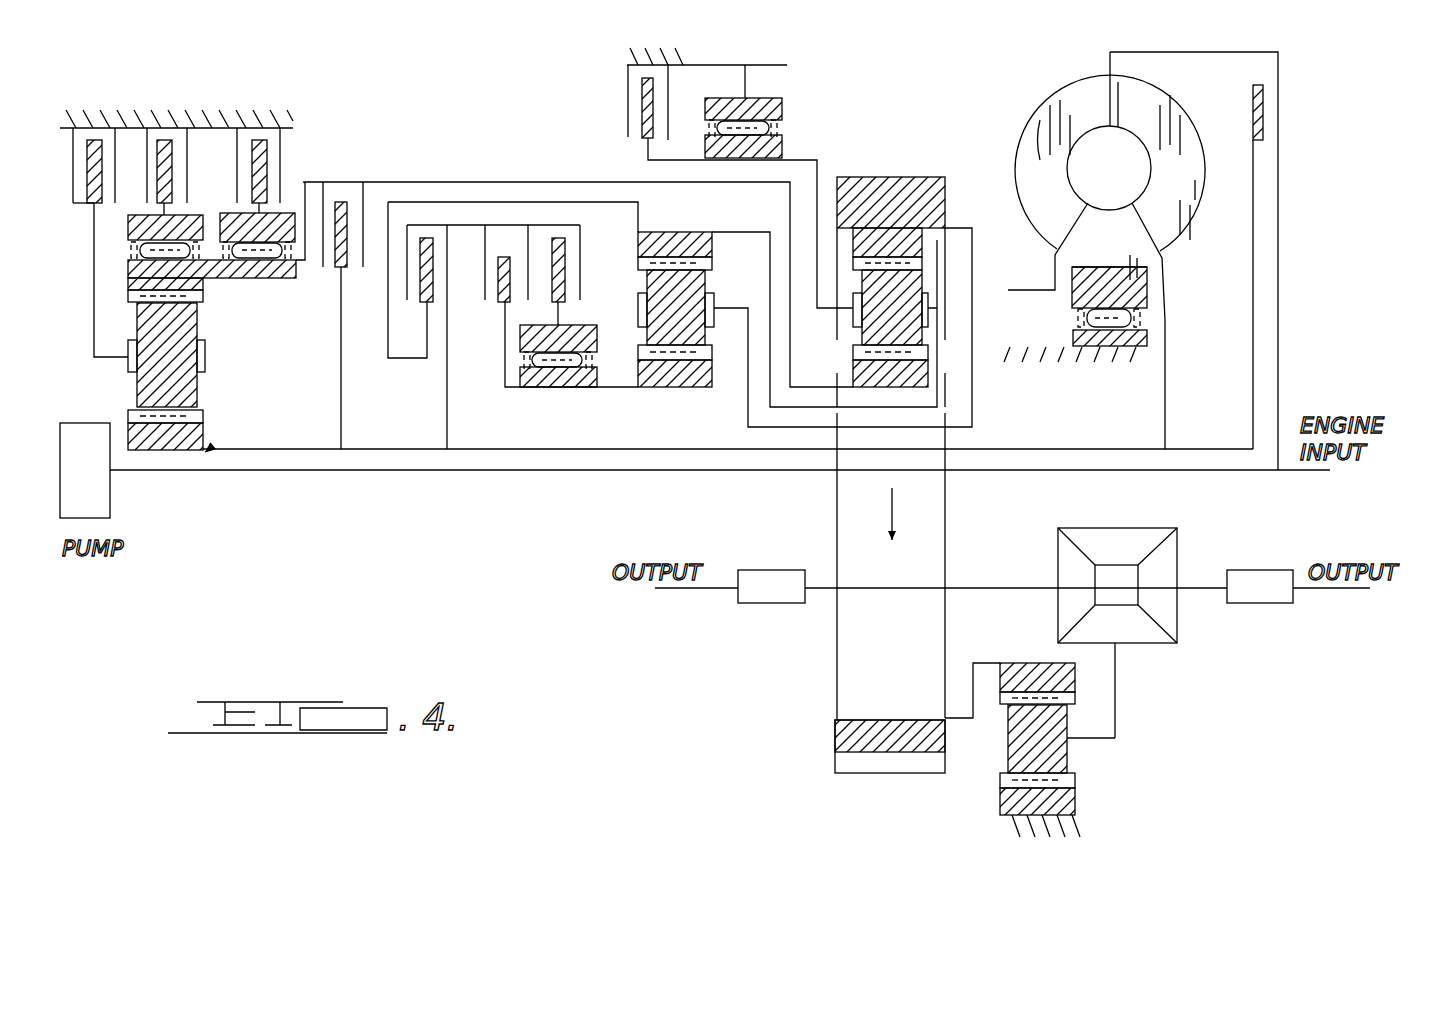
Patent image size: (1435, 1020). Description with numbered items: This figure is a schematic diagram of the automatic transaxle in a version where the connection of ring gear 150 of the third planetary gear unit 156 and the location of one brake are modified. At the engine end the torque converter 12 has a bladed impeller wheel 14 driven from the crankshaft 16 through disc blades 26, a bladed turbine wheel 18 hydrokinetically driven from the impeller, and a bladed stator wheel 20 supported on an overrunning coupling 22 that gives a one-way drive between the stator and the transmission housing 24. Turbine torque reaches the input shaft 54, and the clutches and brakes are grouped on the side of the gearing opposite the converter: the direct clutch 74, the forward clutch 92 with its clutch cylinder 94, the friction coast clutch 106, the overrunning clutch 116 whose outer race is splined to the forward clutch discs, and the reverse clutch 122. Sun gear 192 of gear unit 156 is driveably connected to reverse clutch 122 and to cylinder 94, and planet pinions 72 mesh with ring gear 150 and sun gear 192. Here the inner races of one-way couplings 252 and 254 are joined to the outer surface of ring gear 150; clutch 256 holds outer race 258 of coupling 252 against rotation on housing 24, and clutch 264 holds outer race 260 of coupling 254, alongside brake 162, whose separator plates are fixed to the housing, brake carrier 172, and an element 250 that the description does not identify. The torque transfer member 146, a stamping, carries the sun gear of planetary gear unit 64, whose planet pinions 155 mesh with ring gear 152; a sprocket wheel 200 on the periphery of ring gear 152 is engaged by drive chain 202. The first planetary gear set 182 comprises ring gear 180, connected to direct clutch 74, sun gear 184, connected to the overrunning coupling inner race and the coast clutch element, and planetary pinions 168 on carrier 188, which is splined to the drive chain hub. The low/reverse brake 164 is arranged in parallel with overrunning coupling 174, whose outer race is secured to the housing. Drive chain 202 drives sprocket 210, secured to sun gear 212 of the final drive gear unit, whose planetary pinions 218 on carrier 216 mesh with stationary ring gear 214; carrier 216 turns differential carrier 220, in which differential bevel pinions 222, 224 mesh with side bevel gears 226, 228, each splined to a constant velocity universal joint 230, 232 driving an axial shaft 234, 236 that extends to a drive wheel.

The torque converter 12 is at (1035, 103).
The bladed impeller wheel 14 is at (1056, 197).
The crankshaft 16 is at (1318, 478).
The bladed turbine wheel 18 is at (1187, 180).
The bladed stator wheel 20 is at (1120, 252).
The overrunning coupling 22 is at (1135, 322).
The transmission housing 24 is at (205, 122).
The disc blades 26 is at (1279, 220).
The input shaft 54 is at (587, 452).
The first planetary gear unit 64 is at (982, 320).
The planet pinions 72 is at (182, 385).
The direct clutch 74 is at (398, 278).
The forward clutch 92 is at (566, 250).
The clutch cylinder 94 is at (472, 224).
The friction coast clutch 106 is at (497, 296).
The overrunning clutch 116 is at (560, 375).
The reverse clutch 122 is at (365, 200).
The torque transfer member 146 is at (462, 180).
The ring gear 150 is at (205, 282).
The ring gear 152 is at (905, 245).
The planet pinions 155 is at (830, 312).
The third planetary gear unit 156 is at (124, 393).
The 5B brake 162 is at (73, 200).
The low/reverse brake 164 is at (642, 100).
The planetary pinions 168 is at (662, 311).
The brake carrier 172 is at (112, 358).
The overrunning coupling 174 is at (772, 128).
The ring gear 180 is at (668, 232).
The first planetary gear set 182 is at (722, 226).
The sun gear 184 is at (668, 385).
The carrier 188 is at (730, 306).
The sun gear 192 is at (190, 429).
The sprocket wheel 200 is at (870, 200).
The drive chain 202 is at (835, 690).
The sprocket 210 is at (845, 735).
The sun gear 212 is at (1025, 672).
The ring gear 214 is at (1072, 800).
The carrier 216 is at (1102, 740).
The planetary pinions 218 is at (1012, 742).
The differential carrier 220 is at (1117, 710).
The differential bevel pinion 222 is at (1148, 645).
The differential bevel pinion 224 is at (1115, 528).
The side bevel gear 226 is at (1177, 548).
The side bevel gear 228 is at (1058, 552).
The constant velocity universal joint 230 is at (1263, 602).
The constant velocity universal joint 232 is at (758, 598).
The axial shaft 234 is at (1358, 592).
The axial shaft 236 is at (668, 590).
The bearing 250 is at (255, 292).
The one-way coupling 252 is at (262, 282).
The one-way coupling 254 is at (128, 278).
The 4B clutch 256 is at (282, 148).
The outer race 258 is at (290, 214).
The outer race 260 is at (128, 238).
The 2B clutch 264 is at (133, 150).